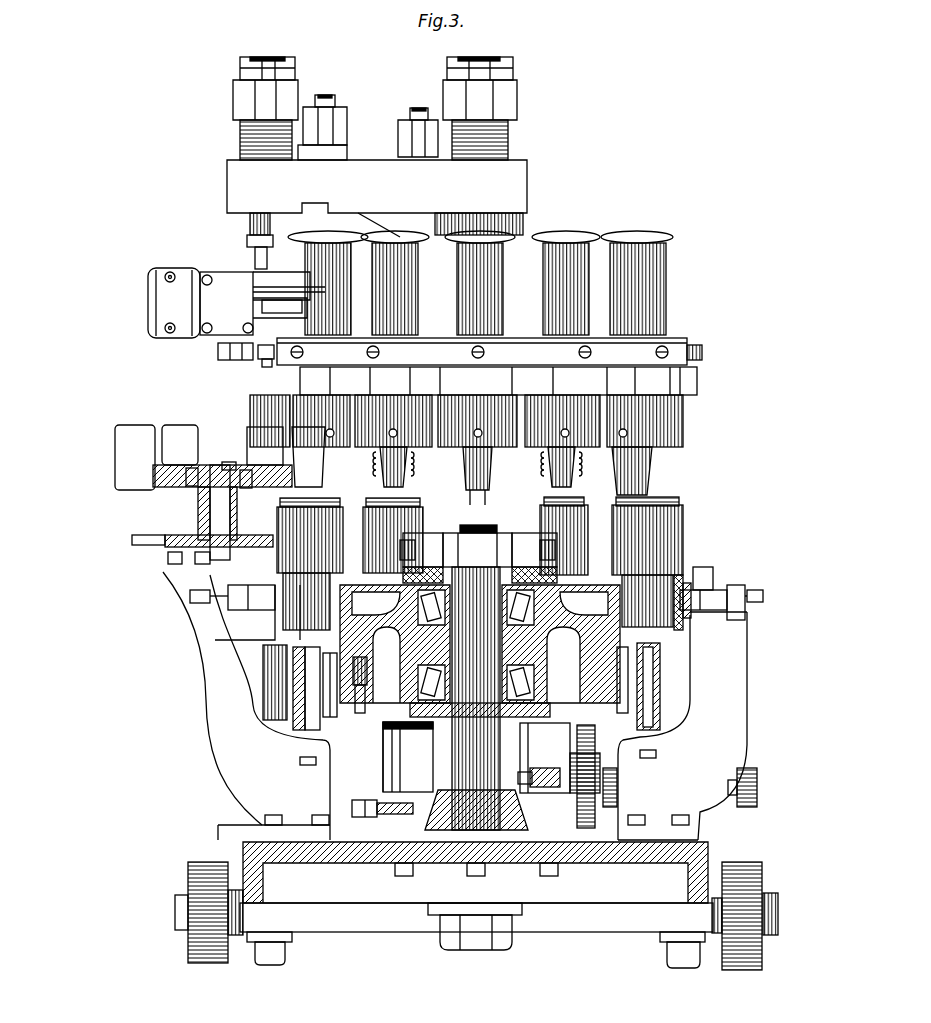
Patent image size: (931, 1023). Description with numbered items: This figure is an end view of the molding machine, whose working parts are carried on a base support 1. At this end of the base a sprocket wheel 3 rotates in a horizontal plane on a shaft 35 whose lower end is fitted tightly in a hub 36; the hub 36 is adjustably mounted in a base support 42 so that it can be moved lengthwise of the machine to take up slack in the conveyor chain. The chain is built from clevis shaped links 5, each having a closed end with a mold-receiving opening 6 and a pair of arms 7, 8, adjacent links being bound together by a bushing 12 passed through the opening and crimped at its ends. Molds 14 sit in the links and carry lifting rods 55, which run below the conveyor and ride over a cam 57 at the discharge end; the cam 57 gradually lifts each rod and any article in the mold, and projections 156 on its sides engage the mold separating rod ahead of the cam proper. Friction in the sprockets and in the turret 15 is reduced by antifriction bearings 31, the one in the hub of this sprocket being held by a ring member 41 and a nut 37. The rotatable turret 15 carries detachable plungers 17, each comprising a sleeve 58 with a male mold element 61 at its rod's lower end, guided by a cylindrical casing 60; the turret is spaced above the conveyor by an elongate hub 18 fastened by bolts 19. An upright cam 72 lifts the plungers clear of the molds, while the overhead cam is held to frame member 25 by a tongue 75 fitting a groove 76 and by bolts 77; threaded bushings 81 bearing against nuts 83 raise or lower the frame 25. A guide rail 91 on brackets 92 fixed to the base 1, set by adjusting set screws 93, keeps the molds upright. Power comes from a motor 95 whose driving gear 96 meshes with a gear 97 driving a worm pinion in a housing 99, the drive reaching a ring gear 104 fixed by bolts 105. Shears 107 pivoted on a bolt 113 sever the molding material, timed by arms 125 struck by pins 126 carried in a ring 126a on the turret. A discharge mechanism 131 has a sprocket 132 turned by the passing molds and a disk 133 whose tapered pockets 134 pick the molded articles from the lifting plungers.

The base support 1 is at (612, 890).
The sprocket wheel 3 is at (394, 653).
The clevis shaped link 5 is at (228, 600).
The mold-receiving opening 6 is at (708, 582).
The arm 7 is at (168, 560).
The arm 8 is at (260, 618).
The bushing 12 is at (681, 573).
The mold 14 is at (480, 563).
The turret 15 is at (484, 390).
The plunger 17 is at (480, 283).
The hub 18 is at (512, 506).
The bolt 19 is at (428, 533).
The frame member 25 is at (377, 186).
The antifriction bearing 31 is at (566, 651).
The shaft 35 is at (492, 646).
The hub 36 is at (433, 748).
The nut 37 is at (477, 546).
The ring member 41 is at (480, 565).
The base support 42 is at (372, 800).
The lifting rod 55 is at (335, 710).
The cam 57 is at (298, 700).
The sleeve 58 is at (666, 300).
The cylindrical casing 60 is at (392, 410).
The male mold element 61 is at (635, 470).
The upright cam 72 is at (522, 238).
The tongue 75 is at (316, 205).
The groove 76 is at (305, 210).
The bolt 77 is at (410, 130).
The threaded bushing 81 is at (240, 143).
The nut 83 is at (283, 70).
The guide rail 91 is at (735, 590).
The bracket 92 is at (206, 738).
The adjusting set screw 93 is at (230, 597).
The motor 95 is at (757, 770).
The driving gear 96 is at (595, 818).
The gear 97 is at (588, 725).
The housing 99 is at (383, 745).
The ring gear 104 is at (268, 672).
The bolt 105 is at (362, 688).
The shears 107 is at (213, 338).
The bolt 113 is at (256, 248).
The arm 125 is at (235, 358).
The pin 126 is at (680, 338).
The ring 126a is at (660, 340).
The discharge mechanism 131 is at (162, 487).
The sprocket 132 is at (132, 543).
The disk 133 is at (220, 462).
The pocket 134 is at (115, 468).
The projection 156 is at (725, 655).